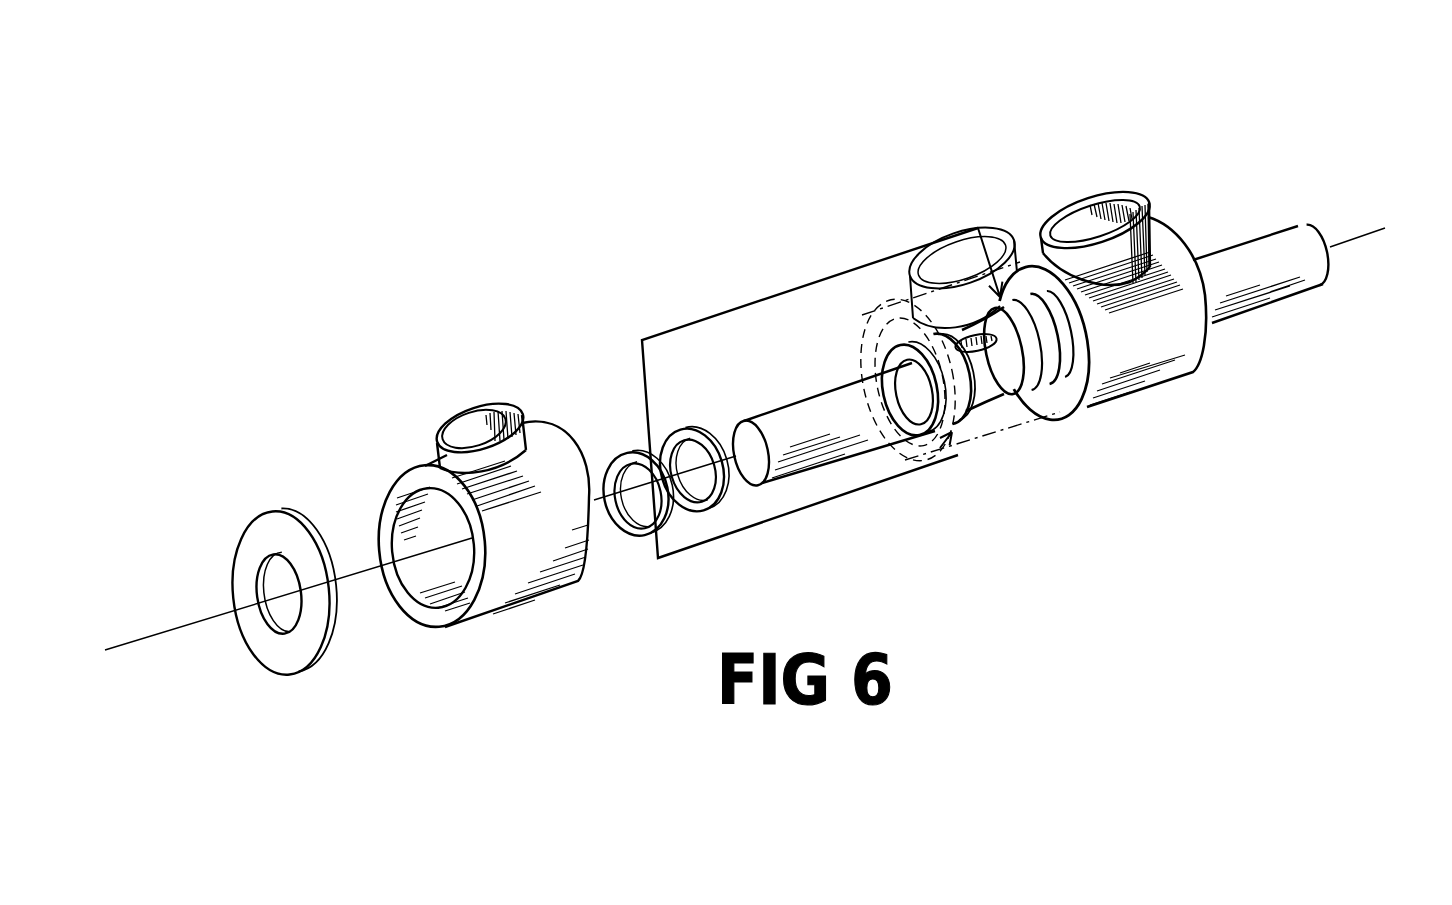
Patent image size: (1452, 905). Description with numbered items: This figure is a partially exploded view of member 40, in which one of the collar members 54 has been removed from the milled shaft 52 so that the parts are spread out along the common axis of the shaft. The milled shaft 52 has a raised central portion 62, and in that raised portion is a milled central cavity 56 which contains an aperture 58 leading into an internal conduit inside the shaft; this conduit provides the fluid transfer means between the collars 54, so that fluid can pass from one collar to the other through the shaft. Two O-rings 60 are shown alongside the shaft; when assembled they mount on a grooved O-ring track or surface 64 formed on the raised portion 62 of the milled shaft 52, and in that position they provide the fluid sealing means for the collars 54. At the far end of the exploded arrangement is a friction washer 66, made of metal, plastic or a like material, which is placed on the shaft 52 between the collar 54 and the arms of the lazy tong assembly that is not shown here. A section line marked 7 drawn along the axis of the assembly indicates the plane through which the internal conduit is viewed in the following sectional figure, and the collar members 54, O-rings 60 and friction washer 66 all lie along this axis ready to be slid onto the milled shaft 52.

The section line 7- 7 is at (196, 643).
The member 40 is at (1203, 185).
The milled shaft 52 is at (775, 418).
The collar member 54 is at (422, 465).
The milled central cavity 56 is at (988, 388).
The aperture 58 is at (963, 337).
The O-rings 60 is at (620, 457).
The raised central portion 62 is at (922, 425).
The grooved o-ring track 64 is at (1053, 410).
The friction washer 66 is at (263, 538).